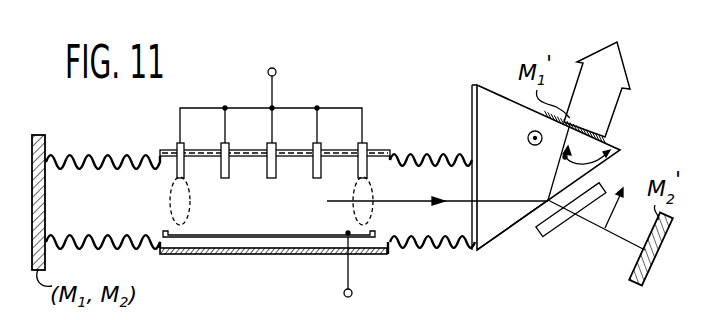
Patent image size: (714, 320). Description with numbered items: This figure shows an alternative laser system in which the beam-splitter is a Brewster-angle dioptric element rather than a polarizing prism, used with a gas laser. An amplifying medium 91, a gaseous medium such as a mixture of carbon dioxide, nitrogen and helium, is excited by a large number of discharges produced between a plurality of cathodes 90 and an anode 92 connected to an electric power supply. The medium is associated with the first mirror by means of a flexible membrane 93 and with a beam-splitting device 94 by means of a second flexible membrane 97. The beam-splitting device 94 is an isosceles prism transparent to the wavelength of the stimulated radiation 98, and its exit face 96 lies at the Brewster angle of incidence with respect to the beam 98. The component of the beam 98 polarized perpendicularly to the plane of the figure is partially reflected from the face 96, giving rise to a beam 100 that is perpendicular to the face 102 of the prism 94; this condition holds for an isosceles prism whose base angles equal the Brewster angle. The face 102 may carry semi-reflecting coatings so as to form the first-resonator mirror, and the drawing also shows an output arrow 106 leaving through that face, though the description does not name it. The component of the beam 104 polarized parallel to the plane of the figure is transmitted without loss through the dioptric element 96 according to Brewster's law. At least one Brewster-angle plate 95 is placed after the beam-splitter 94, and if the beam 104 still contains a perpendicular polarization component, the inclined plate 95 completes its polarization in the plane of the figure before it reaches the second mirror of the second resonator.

The cathodes 90 is at (176, 170).
The amplifying medium 91 is at (260, 203).
The anode 92 is at (222, 237).
The flexible membrane 93 is at (100, 160).
The beam-splitting device 94 is at (488, 113).
The Brewster-angle plate 95 is at (543, 235).
The exit face 96 is at (505, 235).
The second flexible membrane 97 is at (450, 250).
The stimulated radiation beam 98 is at (402, 178).
The reflected beam 100 is at (597, 143).
The prism face 102 is at (520, 167).
The transmitted beam 104 is at (590, 225).
The output beam 106 is at (592, 88).